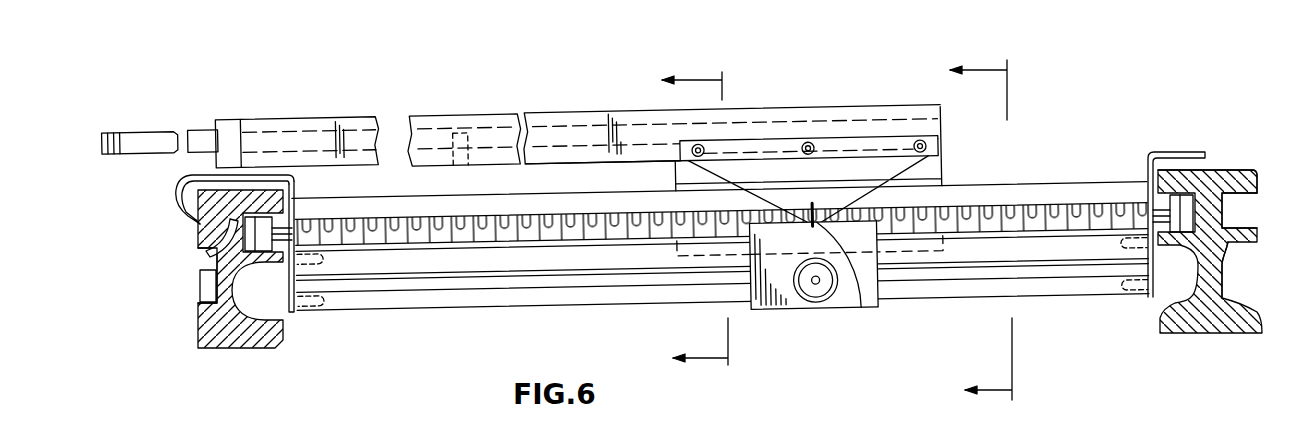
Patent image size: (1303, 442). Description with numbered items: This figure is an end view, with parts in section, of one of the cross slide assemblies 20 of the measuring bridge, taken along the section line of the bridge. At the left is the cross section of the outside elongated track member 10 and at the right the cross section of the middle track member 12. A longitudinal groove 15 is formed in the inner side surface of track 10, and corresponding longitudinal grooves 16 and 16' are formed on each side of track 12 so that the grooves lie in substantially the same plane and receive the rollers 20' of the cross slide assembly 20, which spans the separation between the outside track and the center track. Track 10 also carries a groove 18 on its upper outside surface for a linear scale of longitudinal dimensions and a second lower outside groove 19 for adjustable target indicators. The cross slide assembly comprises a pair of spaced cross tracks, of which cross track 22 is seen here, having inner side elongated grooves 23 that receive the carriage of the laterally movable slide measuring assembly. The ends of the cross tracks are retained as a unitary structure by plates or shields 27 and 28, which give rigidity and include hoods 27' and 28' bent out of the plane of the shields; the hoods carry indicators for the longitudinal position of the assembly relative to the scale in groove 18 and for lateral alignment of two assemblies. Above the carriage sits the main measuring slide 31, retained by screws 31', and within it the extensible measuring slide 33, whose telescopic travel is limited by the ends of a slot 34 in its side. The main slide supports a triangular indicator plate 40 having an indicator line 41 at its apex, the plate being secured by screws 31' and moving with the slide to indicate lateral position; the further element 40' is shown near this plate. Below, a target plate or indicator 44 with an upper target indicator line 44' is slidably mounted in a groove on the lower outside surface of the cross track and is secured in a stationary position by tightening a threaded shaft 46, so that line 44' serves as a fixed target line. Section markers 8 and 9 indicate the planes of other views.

The section line 8- 8 is at (994, 231).
The section line 9- 9 is at (705, 220).
The outside elongated track member 10 is at (243, 343).
The middle track member 12 is at (1205, 314).
The longitudinal groove 15 is at (254, 252).
The longitudinal groove 16 is at (1207, 156).
The longitudinal groove 16' is at (1260, 201).
The groove 18 is at (212, 238).
The second lower outside groove 19 is at (205, 288).
The cross slide assembly 20 is at (1109, 302).
The rollers 20' is at (179, 275).
The cross track 22 is at (470, 296).
The inner side elongated groove 23 is at (943, 195).
The plate or shield 27 is at (313, 280).
The hood 27' is at (186, 199).
The plate or shield 28 is at (1131, 295).
The hood 28' is at (1176, 196).
The main measuring slide 31 is at (809, 115).
The screws 31' is at (740, 113).
The extensible measuring slide 33 is at (138, 138).
The slot 34 is at (362, 138).
The indicator plate 40 is at (854, 181).
The rivet 40' is at (822, 115).
The indicator line 41 is at (602, 177).
The target plate or indicator 44 is at (813, 298).
The upper target indicator line 44' is at (843, 293).
The threaded shaft 46 is at (795, 311).